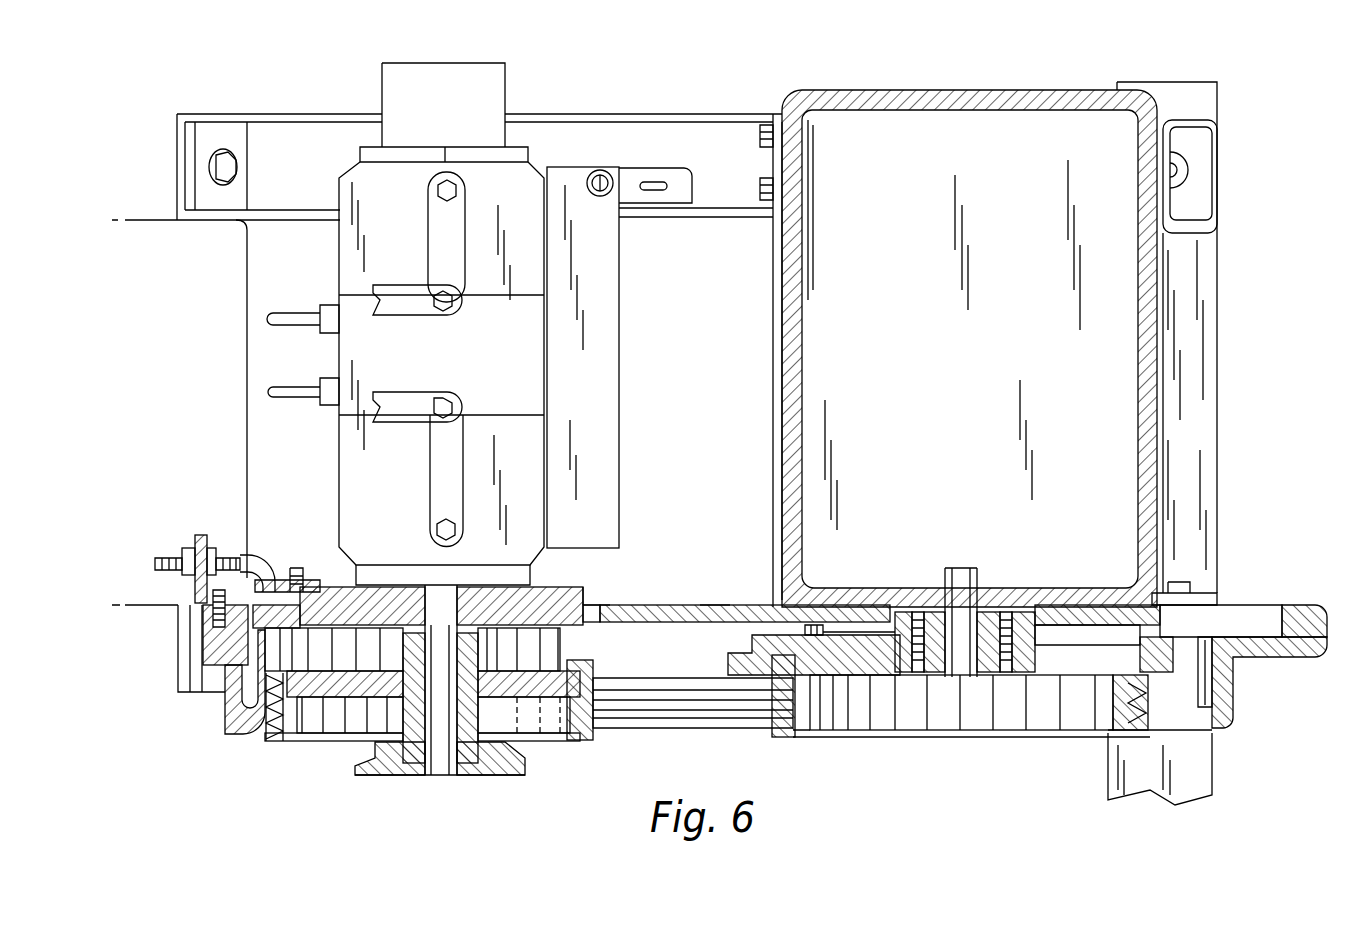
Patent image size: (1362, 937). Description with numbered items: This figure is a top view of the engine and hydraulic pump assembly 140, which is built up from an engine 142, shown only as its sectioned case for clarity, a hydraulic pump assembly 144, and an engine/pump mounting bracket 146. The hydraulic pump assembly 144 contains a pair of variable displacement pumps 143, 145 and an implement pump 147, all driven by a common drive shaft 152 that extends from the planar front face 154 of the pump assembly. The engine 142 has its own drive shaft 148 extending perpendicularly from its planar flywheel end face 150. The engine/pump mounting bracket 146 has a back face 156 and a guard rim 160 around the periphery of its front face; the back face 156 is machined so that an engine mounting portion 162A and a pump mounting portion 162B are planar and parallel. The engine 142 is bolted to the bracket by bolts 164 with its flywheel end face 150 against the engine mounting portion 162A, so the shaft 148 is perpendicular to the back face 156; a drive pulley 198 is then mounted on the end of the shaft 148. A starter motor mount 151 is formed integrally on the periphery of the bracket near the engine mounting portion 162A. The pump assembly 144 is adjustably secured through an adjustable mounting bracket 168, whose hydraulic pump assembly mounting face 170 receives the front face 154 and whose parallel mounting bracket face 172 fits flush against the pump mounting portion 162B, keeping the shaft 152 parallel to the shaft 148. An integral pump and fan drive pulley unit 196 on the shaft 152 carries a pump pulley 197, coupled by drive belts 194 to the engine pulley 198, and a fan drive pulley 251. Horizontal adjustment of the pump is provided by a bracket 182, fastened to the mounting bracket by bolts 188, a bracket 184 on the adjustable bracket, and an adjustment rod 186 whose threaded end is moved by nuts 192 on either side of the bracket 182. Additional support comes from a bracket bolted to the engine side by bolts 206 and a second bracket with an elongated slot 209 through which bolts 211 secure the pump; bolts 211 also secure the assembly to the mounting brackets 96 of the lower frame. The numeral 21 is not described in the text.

The bolt 21 is at (232, 190).
The mounting brackets 96 is at (183, 116).
The engine and hydraulic pump assembly 140 is at (1235, 208).
The engine 142 is at (992, 135).
The variable displacement pump 143 is at (350, 250).
The hydraulic pump assembly 144 is at (540, 162).
The variable displacement pump 145 is at (350, 497).
The engine/pump mounting bracket 146 is at (748, 602).
The implement pump 147 is at (455, 70).
The drive shaft 148 is at (962, 580).
The flywheel end face 150 is at (1072, 605).
The starter motor mount 151 is at (1298, 620).
The drive shaft 152 is at (438, 780).
The front face 154 is at (555, 600).
The back face 156 is at (710, 605).
The guard rim 160 is at (1218, 685).
The engine mounting portion 162A is at (1050, 620).
The pump mounting portion 162B is at (632, 605).
The bolts 164 is at (882, 606).
The adjustable mounting bracket 168 is at (612, 600).
The hydraulic pump assembly mounting face 170 is at (590, 603).
The mounting bracket face 172 is at (560, 625).
The bracket 182 is at (200, 535).
The bracket 184 is at (272, 578).
The adjustment rod 186 is at (168, 558).
The bolts 188 is at (198, 585).
The nuts 192 is at (188, 548).
The drive belts 194 is at (668, 725).
The integral pump and fan drive pulley unit 196 is at (505, 774).
The pump pulley 197 is at (583, 735).
The drive pulley 198 is at (782, 733).
The bolts 206 is at (762, 195).
The elongated slot 209 is at (660, 185).
The bolts 211 is at (604, 175).
The fan drive pulley 251 is at (368, 776).